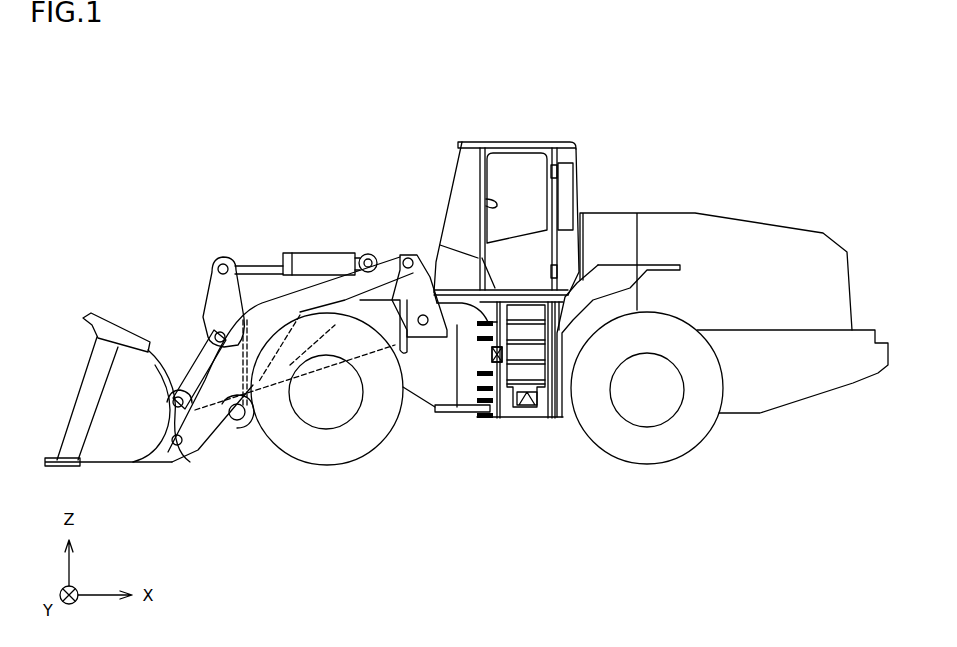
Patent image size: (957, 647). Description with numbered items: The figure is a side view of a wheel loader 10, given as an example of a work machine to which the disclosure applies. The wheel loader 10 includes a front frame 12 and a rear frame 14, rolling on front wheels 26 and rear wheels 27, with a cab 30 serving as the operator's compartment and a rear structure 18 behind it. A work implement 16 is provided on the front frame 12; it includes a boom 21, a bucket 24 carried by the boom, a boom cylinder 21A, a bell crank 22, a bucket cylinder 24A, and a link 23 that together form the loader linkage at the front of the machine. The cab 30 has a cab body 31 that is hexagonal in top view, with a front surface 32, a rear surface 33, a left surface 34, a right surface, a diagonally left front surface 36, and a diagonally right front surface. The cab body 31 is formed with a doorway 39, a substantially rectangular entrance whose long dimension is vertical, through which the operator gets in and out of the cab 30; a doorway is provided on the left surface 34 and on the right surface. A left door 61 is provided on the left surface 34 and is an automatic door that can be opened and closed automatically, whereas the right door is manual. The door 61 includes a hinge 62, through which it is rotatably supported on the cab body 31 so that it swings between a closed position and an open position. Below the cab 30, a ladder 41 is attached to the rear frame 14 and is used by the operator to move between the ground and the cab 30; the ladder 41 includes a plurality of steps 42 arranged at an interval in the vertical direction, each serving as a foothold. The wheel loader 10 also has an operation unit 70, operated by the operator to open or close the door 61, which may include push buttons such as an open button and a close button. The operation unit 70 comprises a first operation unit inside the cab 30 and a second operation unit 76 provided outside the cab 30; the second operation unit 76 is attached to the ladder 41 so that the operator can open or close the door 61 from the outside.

The wheel loader 10 is at (621, 112).
The front frame 12 is at (417, 387).
The rear frame 14 is at (570, 347).
The work implement 16 is at (198, 303).
The rear structure 18 is at (737, 240).
The boom 21 is at (270, 318).
The boom cylinder 21A is at (372, 260).
The bell crank 22 is at (222, 302).
The link 23 is at (191, 393).
The bucket 24 is at (117, 406).
The bucket cylinder 24A is at (311, 266).
The front wheels 26 is at (326, 442).
The rear wheels 27 is at (648, 442).
The cab 30 is at (551, 138).
The cab body 31 is at (517, 142).
The front surface 32 is at (450, 193).
The rear surface 33 is at (578, 180).
The left surface 34 is at (526, 166).
The diagonally left front surface 36 is at (469, 162).
The doorway 39 is at (484, 205).
The ladder 41 is at (521, 402).
The steps 42 is at (543, 402).
The left door 61 is at (501, 182).
The hinge 62 is at (557, 166).
The operation unit 70 is at (492, 357).
The second operation unit 76 is at (497, 354).